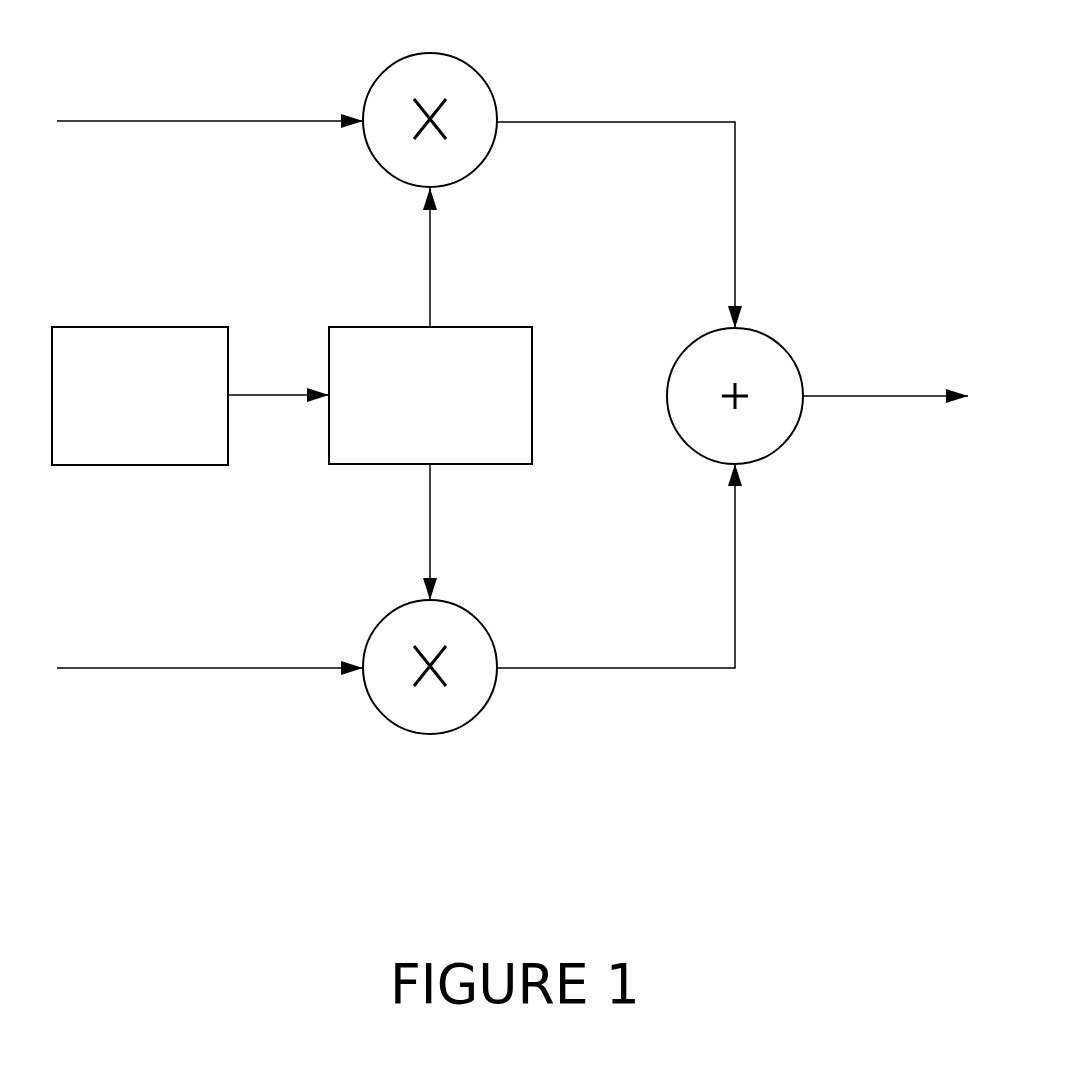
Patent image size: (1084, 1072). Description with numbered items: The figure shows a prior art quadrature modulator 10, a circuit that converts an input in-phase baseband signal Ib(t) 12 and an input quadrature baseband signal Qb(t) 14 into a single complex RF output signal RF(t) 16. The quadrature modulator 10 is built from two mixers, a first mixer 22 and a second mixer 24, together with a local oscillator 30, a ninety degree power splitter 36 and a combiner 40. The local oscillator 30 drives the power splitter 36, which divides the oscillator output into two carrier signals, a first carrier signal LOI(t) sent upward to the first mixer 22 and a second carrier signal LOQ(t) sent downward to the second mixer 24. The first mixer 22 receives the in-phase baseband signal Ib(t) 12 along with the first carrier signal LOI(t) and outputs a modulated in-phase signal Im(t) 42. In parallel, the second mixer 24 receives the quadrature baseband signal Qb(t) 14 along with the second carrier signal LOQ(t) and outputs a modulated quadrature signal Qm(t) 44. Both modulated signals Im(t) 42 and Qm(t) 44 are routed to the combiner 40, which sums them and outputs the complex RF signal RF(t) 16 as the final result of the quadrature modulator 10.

The quadrature modulator 10 is at (195, 883).
The input in-phase baseband signal Ib(t) 12 is at (210, 98).
The input quadrature baseband signal Qb(t) 14 is at (210, 645).
The complex RF output signal RF(t) 16 is at (885, 364).
The first mixer 22 is at (428, 53).
The second mixer 24 is at (430, 737).
The local oscillator 30 is at (127, 429).
The 90° power splitter 36 is at (417, 414).
The combiner 40 is at (663, 397).
The modulated in-phase signal Im(t) 42 is at (616, 209).
The modulated quadrature signal Qm(t) 44 is at (616, 566).